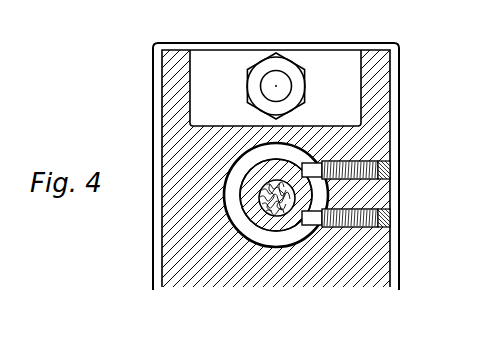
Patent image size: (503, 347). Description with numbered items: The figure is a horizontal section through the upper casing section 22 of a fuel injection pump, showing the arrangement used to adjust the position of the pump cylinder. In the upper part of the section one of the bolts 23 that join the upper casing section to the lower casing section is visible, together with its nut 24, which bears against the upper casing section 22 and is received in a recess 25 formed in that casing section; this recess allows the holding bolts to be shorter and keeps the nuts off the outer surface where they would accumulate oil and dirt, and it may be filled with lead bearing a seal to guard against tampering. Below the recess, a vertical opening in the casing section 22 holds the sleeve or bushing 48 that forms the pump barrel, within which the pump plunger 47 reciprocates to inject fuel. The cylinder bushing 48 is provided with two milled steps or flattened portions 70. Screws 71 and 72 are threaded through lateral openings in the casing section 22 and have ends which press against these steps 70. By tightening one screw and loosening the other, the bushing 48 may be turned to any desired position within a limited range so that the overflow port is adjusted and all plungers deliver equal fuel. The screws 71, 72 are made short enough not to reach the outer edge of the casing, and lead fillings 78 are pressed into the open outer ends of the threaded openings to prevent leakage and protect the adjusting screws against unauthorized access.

The upper casing section 22 is at (178, 163).
The bolts 23 is at (268, 83).
The nuts 24 is at (287, 72).
The recesses 25 is at (212, 58).
The pump plunger 47 is at (273, 182).
The sleeve or bushing 48 is at (277, 230).
The steps or flattened portions 70 is at (305, 150).
The screw 71 is at (370, 228).
The screw 72 is at (372, 160).
The lead fillings 78 is at (386, 215).